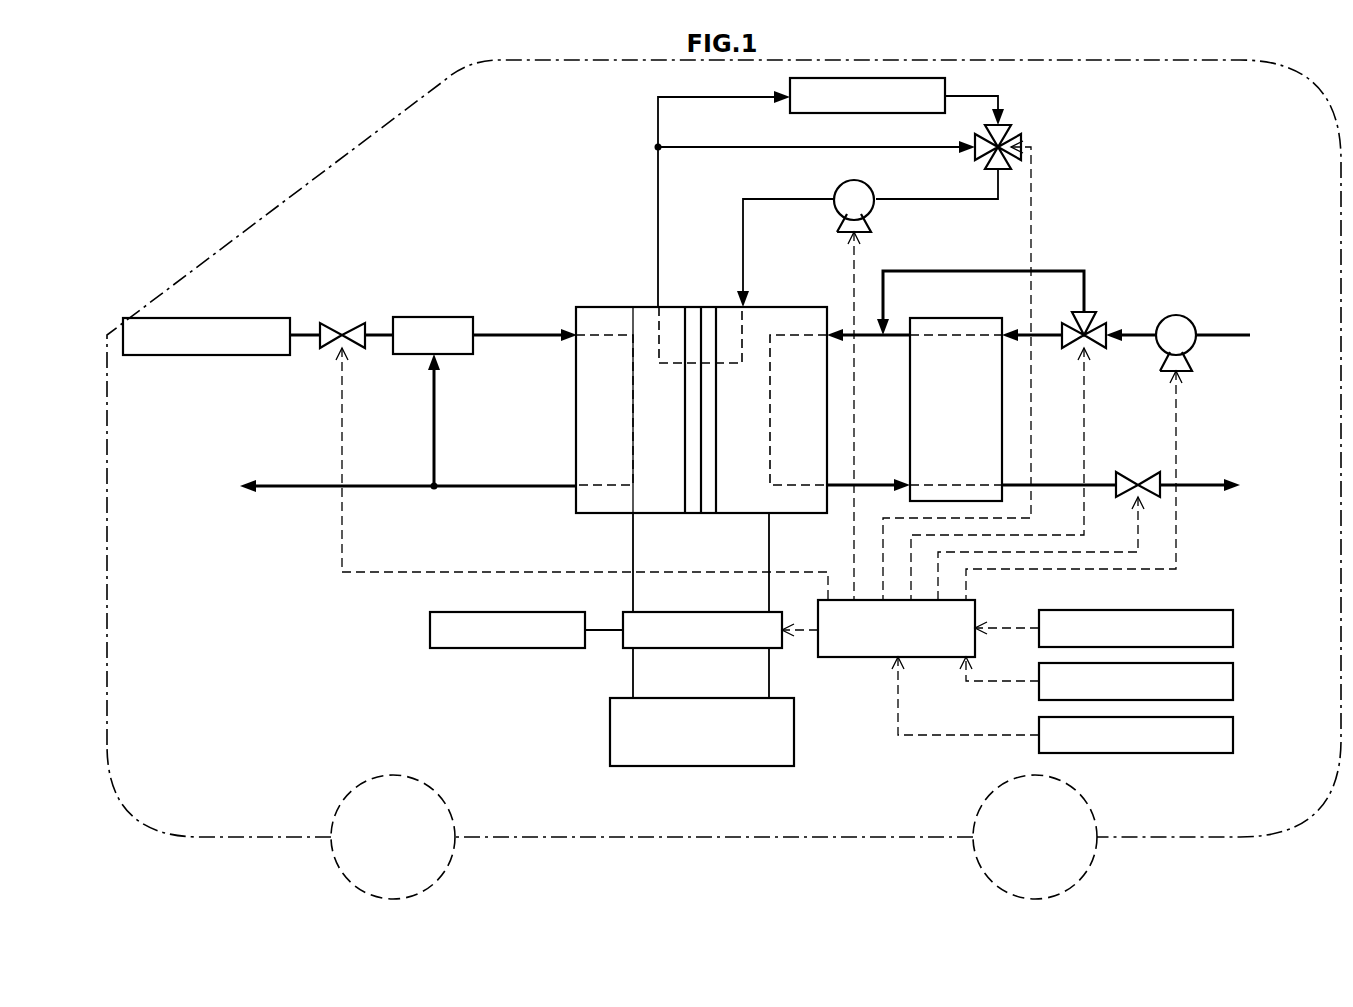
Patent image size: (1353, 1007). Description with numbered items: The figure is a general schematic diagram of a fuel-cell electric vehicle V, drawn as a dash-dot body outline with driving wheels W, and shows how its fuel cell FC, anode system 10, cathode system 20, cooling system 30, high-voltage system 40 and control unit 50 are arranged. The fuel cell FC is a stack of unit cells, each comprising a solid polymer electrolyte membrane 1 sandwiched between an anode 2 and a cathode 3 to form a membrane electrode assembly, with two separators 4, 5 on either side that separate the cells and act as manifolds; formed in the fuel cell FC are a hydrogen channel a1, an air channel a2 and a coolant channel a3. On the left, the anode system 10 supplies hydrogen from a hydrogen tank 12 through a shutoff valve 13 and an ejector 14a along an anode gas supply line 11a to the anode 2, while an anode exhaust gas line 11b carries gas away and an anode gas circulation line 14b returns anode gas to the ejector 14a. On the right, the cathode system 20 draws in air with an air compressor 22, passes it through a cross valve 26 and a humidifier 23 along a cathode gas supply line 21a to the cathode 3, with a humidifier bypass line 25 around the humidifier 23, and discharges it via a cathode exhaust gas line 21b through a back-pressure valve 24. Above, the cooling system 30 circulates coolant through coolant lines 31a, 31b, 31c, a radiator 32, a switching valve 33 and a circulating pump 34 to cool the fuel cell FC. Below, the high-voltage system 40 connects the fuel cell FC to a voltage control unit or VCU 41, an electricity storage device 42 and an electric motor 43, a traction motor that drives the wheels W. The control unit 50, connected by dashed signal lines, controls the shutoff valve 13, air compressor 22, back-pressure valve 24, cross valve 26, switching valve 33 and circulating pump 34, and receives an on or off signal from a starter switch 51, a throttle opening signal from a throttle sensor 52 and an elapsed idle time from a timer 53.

The fuel-cell electric vehicle V is at (195, 148).
The driving wheels W is at (1095, 852).
The fuel cell FC is at (575, 302).
The solid polymer electrolyte membrane 1 is at (701, 513).
The anode 2 is at (690, 513).
The cathode 3 is at (716, 513).
The separator 4 is at (612, 513).
The separator 5 is at (782, 513).
The hydrogen channel a1 is at (633, 458).
The air channel a2 is at (772, 445).
The coolant channel a3 is at (660, 327).
The anode system 10 is at (357, 258).
The anode gas supply line 11a is at (520, 332).
The anode exhaust gas line 11b is at (500, 486).
The hydrogen tank 12 is at (205, 318).
The shutoff valve 13 is at (340, 323).
The ejector 14a is at (432, 318).
The anode gas circulation line 14b is at (434, 430).
The cathode system 20 is at (1101, 260).
The cathode gas supply line 21a is at (868, 335).
The cathode exhaust gas line 21b is at (875, 485).
The air compressor 22 is at (1196, 320).
The humidifier 23 is at (955, 318).
The back-pressure valve 24 is at (1142, 470).
The humidifier bypass line 25 is at (952, 270).
The cross valve 26 is at (1100, 322).
The cooling system 30 is at (1088, 137).
The coolant line 31a is at (657, 185).
The coolant line 31b is at (935, 200).
The coolant line 31c is at (880, 148).
The radiator 32 is at (812, 112).
The switching valve 33 is at (1008, 132).
The circulating pump 34 is at (837, 190).
The high-voltage system 40 is at (510, 684).
The voltage control unit (VCU) 41 is at (700, 612).
The electricity storage device 42 is at (610, 712).
The electric motor (MOT) 43 is at (430, 628).
The control unit 50 is at (862, 657).
The starter switch (IGSW) 51 is at (1233, 681).
The throttle sensor 52 is at (1233, 628).
The timer 53 is at (1233, 735).